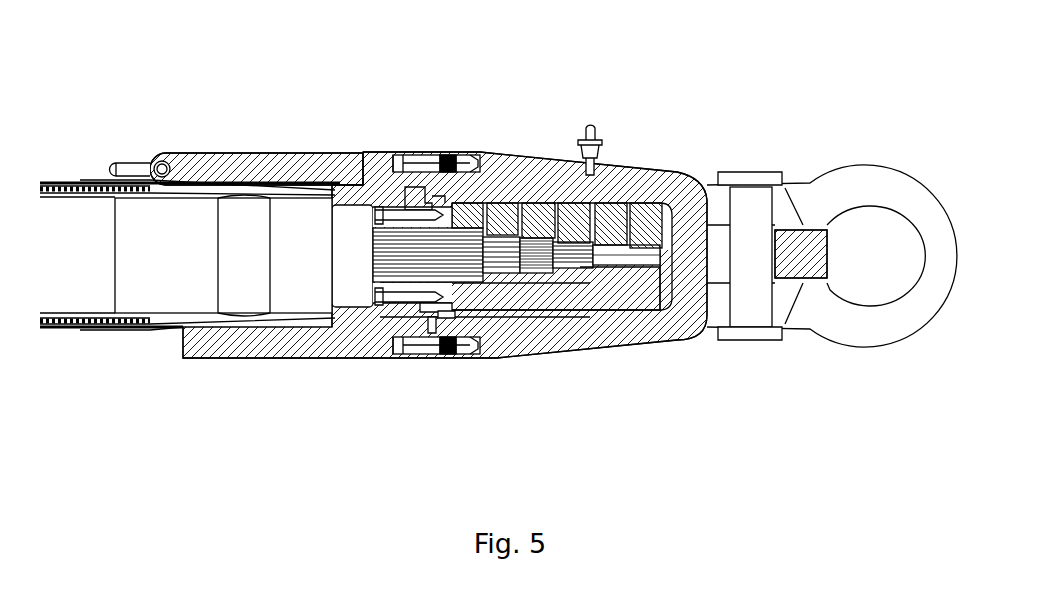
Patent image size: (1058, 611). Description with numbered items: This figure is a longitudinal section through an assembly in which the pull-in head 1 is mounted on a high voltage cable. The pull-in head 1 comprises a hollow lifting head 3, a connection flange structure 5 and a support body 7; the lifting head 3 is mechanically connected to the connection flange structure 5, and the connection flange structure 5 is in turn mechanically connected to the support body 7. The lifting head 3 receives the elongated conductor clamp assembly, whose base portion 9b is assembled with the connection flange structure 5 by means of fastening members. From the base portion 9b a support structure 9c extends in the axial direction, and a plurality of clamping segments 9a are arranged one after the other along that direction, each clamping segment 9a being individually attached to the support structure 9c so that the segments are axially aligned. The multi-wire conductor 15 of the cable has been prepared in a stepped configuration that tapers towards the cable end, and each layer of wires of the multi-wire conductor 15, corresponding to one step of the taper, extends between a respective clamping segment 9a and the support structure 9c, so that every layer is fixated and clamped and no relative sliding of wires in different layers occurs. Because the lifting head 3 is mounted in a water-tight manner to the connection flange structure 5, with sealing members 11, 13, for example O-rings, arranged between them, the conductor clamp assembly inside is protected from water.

The pull-in head 1 is at (750, 42).
The lifting head 3 is at (465, 152).
The connection flange structure 5 is at (408, 152).
The support body 7 is at (275, 152).
The clamping segments 9a is at (467, 213).
The base portion 9b is at (425, 308).
The support structure 9c is at (563, 303).
The sealing member 11 is at (435, 327).
The sealing member 13 is at (442, 315).
The multi-wire conductor 15 is at (460, 270).